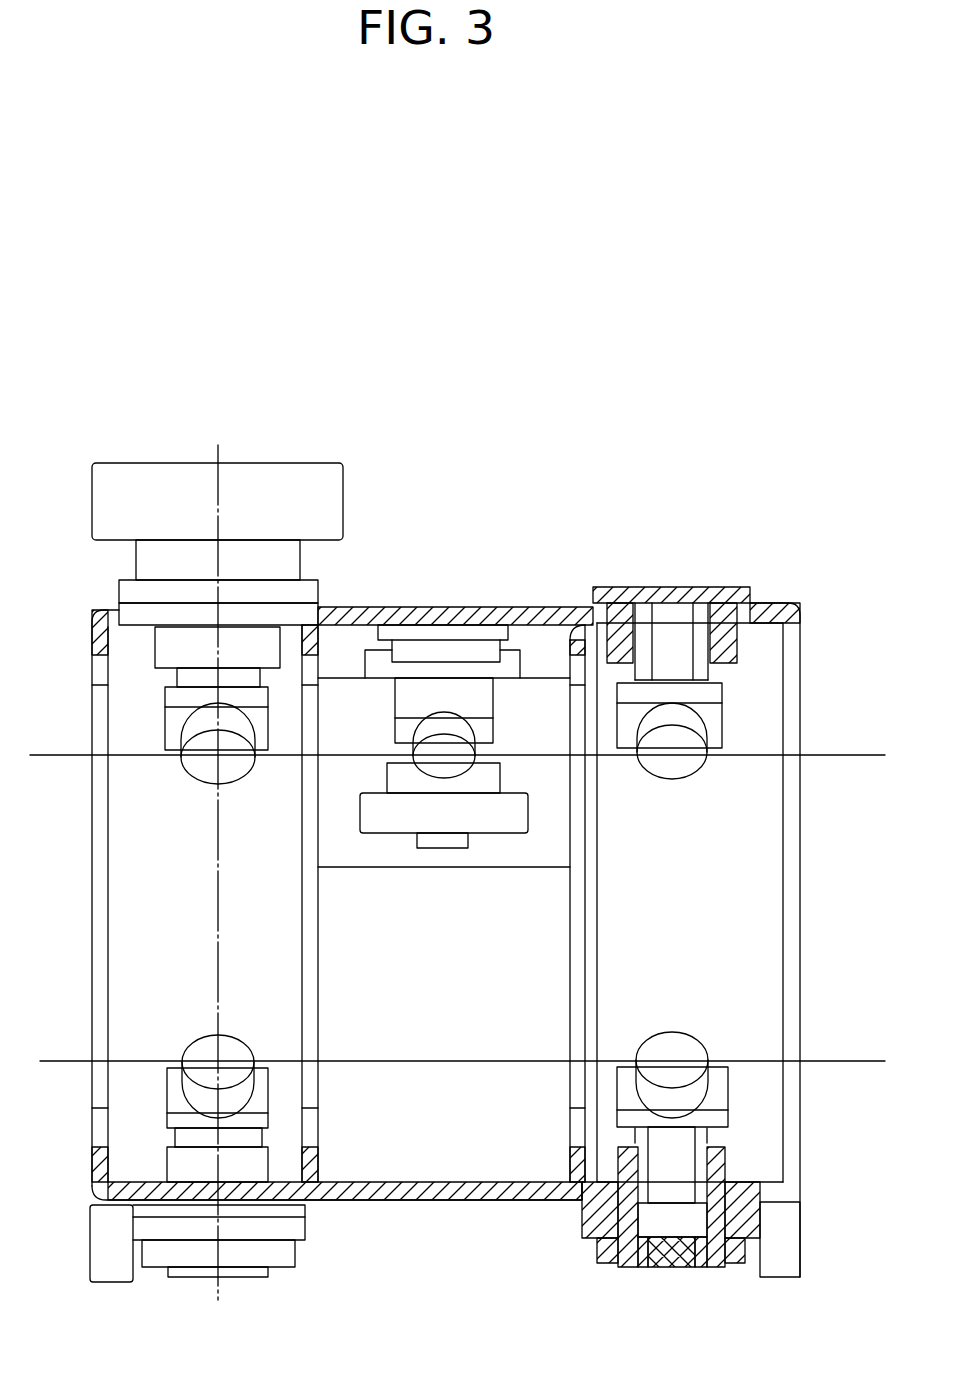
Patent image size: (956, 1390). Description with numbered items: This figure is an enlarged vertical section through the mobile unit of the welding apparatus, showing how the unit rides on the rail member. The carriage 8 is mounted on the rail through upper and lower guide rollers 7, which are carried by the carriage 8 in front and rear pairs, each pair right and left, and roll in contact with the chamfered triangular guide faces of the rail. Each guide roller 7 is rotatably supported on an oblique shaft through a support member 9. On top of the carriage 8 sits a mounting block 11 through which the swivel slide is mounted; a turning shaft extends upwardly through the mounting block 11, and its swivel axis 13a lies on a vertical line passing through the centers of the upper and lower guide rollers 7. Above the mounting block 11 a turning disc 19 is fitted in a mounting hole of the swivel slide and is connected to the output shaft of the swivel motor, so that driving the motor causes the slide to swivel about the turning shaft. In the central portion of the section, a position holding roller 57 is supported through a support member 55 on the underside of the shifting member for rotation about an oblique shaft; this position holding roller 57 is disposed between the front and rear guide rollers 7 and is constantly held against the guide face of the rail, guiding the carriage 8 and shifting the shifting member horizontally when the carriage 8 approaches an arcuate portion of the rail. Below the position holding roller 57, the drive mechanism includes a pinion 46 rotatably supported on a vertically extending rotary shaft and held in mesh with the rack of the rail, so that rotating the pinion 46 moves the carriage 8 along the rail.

The guide roller 7 is at (200, 775).
The carriage 8 is at (467, 1188).
The support member 9 is at (180, 677).
The mounting block 11 is at (318, 585).
The swivel axis 13a is at (217, 957).
The turning disc 19 is at (343, 481).
The pinion 46 is at (507, 823).
The support member 55 is at (473, 687).
The position holding roller 57 is at (428, 763).